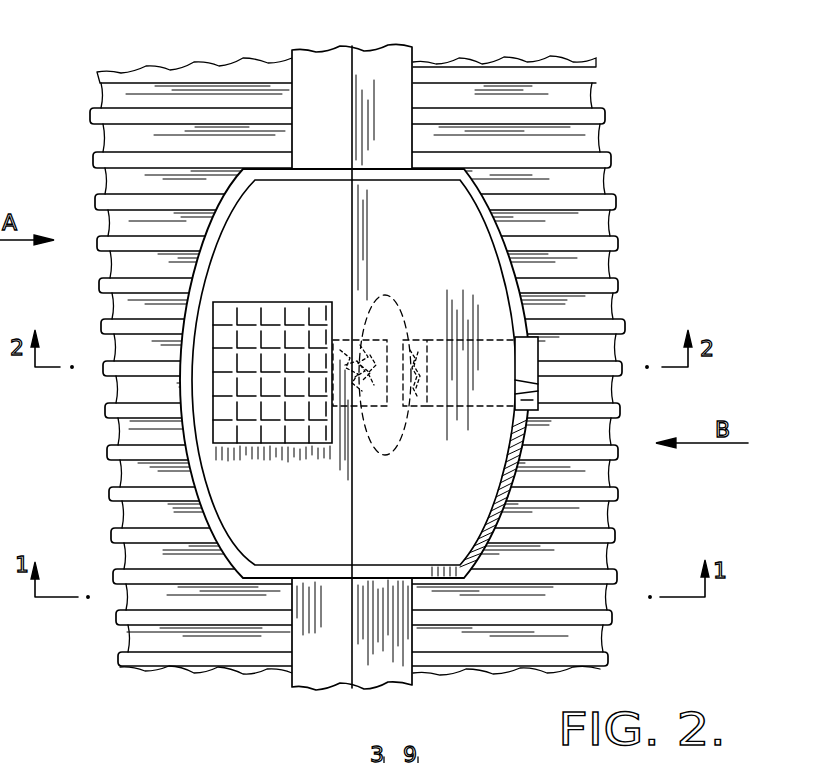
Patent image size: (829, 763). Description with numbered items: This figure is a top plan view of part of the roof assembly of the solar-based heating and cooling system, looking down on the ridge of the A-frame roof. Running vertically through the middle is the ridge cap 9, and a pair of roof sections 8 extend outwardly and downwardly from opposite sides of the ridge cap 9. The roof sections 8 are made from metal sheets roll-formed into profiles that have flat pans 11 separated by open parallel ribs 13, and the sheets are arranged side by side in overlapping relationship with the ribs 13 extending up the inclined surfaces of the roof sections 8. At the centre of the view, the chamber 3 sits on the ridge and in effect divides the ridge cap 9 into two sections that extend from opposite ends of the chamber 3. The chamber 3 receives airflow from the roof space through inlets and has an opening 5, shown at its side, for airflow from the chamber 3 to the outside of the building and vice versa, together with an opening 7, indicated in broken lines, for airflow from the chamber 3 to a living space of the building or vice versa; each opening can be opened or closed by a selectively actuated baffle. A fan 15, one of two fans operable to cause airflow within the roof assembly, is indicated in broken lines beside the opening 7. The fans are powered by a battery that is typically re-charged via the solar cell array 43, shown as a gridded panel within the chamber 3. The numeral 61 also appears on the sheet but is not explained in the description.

The chamber 3 is at (432, 260).
The opening 5 is at (540, 389).
The opening 7 is at (376, 318).
The roof section 8 is at (585, 120).
The ridge cap 9 is at (317, 97).
The flat pan 11 is at (588, 138).
The rib 13 is at (97, 205).
The fan 15 is at (385, 384).
The solar cell array 43 is at (243, 327).
The element 61 is at (313, 755).